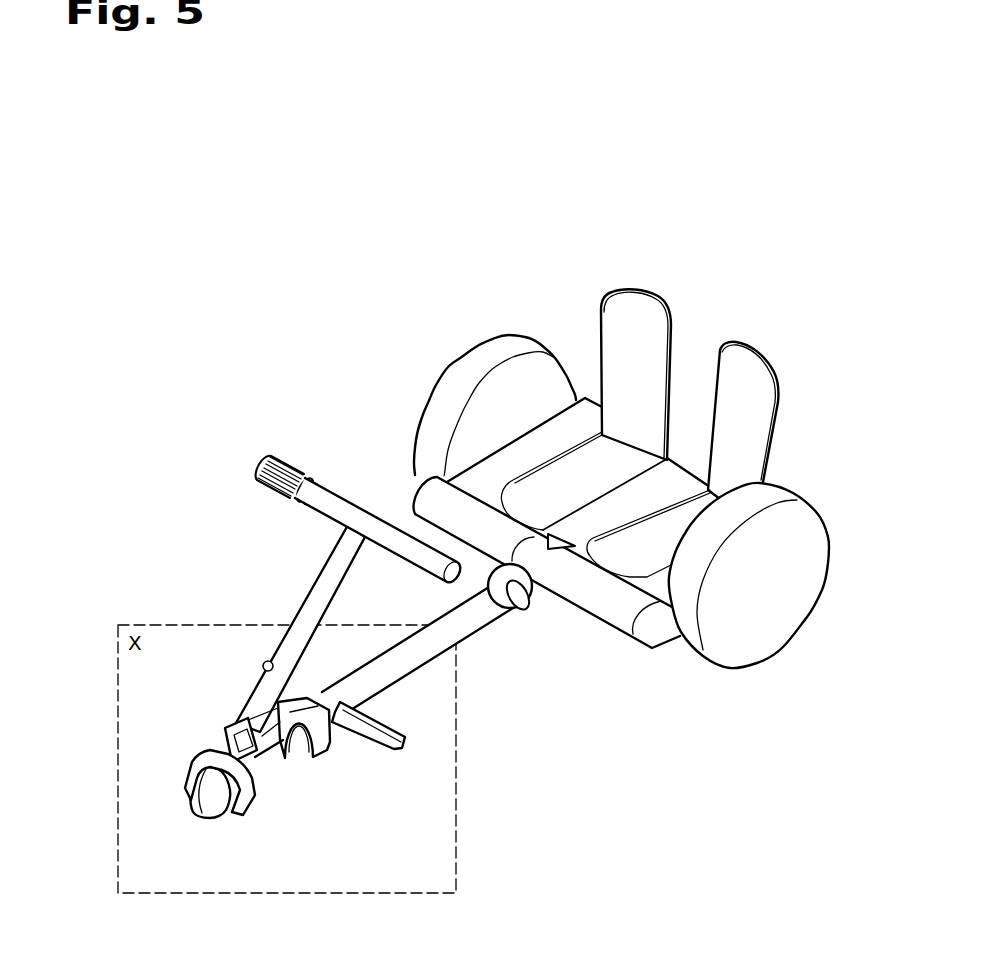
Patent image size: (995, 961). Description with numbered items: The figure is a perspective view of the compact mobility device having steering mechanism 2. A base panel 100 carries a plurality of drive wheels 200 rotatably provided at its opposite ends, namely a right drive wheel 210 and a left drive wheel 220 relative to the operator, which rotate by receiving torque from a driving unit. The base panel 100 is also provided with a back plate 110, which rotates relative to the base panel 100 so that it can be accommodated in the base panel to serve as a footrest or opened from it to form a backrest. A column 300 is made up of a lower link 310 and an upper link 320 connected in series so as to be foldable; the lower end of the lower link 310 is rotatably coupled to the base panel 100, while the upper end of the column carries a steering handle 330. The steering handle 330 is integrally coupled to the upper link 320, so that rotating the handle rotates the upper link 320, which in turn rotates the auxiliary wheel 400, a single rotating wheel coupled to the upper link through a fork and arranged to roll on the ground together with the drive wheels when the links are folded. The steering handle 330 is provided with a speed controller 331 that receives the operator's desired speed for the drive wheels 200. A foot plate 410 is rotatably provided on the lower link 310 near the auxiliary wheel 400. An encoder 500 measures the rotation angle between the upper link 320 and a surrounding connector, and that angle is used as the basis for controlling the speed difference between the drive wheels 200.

The compact mobility device having steering mechanism 2 is at (158, 590).
The base panel 100 is at (605, 613).
The back plate 110 is at (737, 383).
The drive wheels 200 is at (530, 307).
The right drive wheel 210 is at (479, 358).
The left drive wheel 220 is at (788, 622).
The column 300 is at (275, 555).
The lower link 310 is at (482, 617).
The upper link 320 is at (307, 613).
The steering handle 330 is at (335, 503).
The speed controller 331 is at (282, 468).
The auxiliary wheel 400 is at (210, 813).
The foot plate 410 is at (410, 740).
The encoder 500 is at (237, 742).